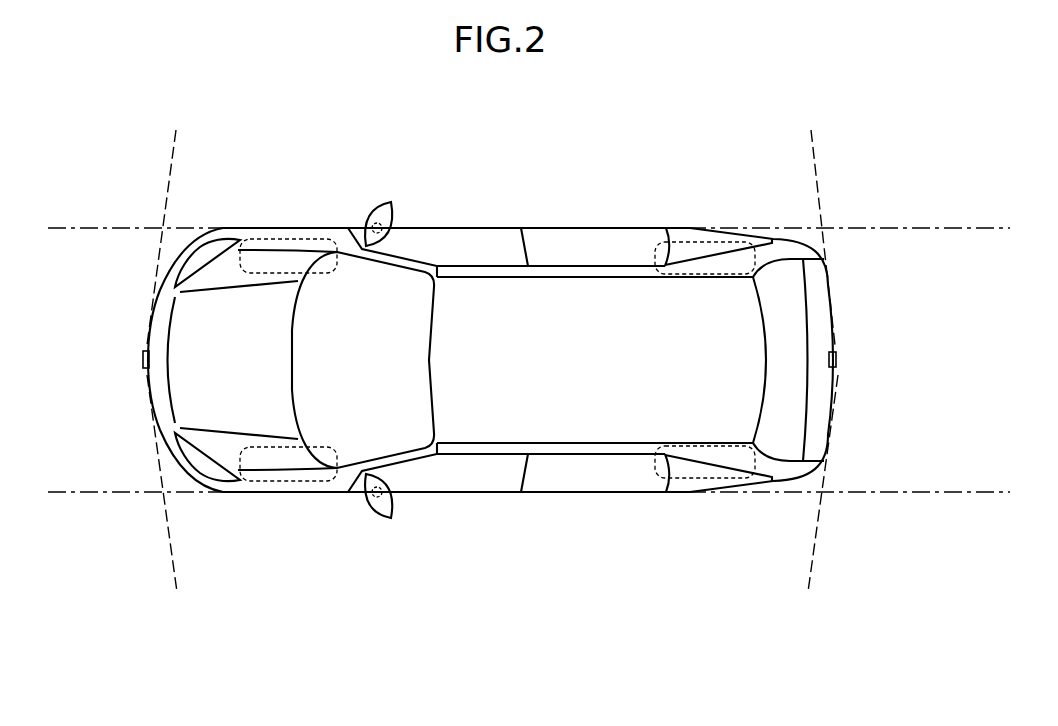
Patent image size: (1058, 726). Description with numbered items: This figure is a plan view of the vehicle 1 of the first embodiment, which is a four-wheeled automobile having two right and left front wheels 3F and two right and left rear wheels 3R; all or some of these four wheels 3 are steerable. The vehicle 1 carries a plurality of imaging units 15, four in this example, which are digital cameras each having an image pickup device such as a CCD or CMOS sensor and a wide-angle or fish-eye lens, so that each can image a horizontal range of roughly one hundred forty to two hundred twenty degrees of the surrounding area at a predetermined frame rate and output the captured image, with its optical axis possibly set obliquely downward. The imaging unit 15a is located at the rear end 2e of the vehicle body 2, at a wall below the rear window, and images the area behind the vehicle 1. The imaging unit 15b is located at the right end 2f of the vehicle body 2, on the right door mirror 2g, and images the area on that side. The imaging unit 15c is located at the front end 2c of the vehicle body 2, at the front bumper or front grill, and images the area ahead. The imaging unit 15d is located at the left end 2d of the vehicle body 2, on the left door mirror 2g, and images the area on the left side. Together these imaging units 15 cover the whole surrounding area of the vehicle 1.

The vehicle 1 is at (615, 138).
The vehicle body 2 is at (779, 225).
The front end 2c is at (146, 377).
The left end 2d is at (597, 494).
The rear end 2e is at (838, 381).
The right end 2f is at (607, 226).
The door mirror 2g is at (392, 204).
The wheels 3 is at (497, 362).
The front wheels 3F is at (287, 238).
The rear wheels 3R is at (702, 241).
The imaging units 15 is at (502, 376).
The imaging unit 15a is at (838, 358).
The imaging unit 15b is at (376, 223).
The imaging unit 15c is at (144, 358).
The imaging unit 15d is at (375, 497).